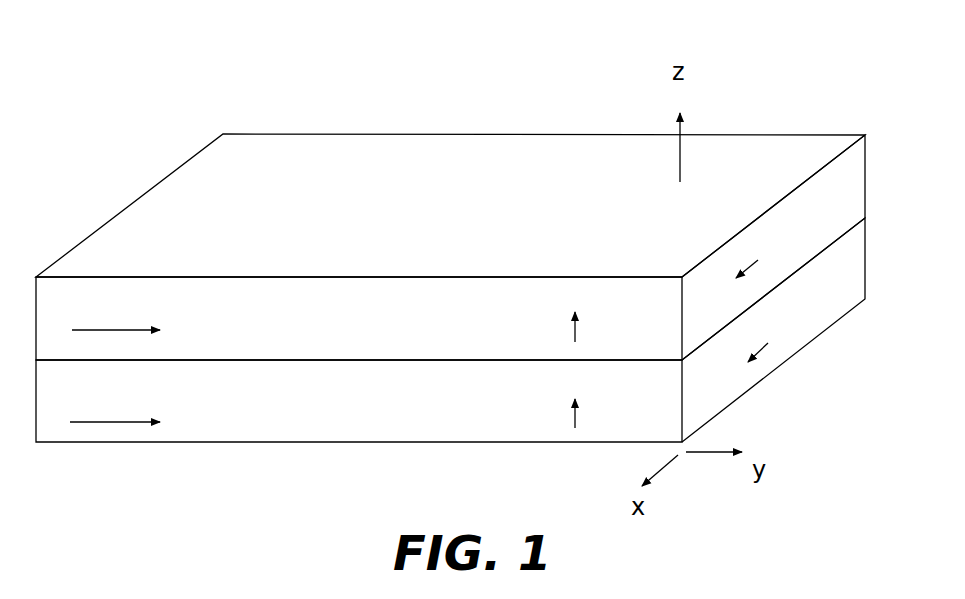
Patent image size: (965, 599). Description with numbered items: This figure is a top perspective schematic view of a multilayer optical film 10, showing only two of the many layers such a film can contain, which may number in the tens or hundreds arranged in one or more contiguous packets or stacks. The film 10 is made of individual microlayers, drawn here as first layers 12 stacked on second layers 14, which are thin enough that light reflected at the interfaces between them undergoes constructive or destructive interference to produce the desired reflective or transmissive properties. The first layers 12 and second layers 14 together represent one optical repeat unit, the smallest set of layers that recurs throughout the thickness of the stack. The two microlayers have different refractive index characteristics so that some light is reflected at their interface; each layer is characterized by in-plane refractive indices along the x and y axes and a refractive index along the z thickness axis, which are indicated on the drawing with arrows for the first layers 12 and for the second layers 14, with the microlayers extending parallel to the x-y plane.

The multilayer optical film 10 is at (512, 72).
The first layers 12 is at (865, 180).
The second layers 14 is at (865, 258).